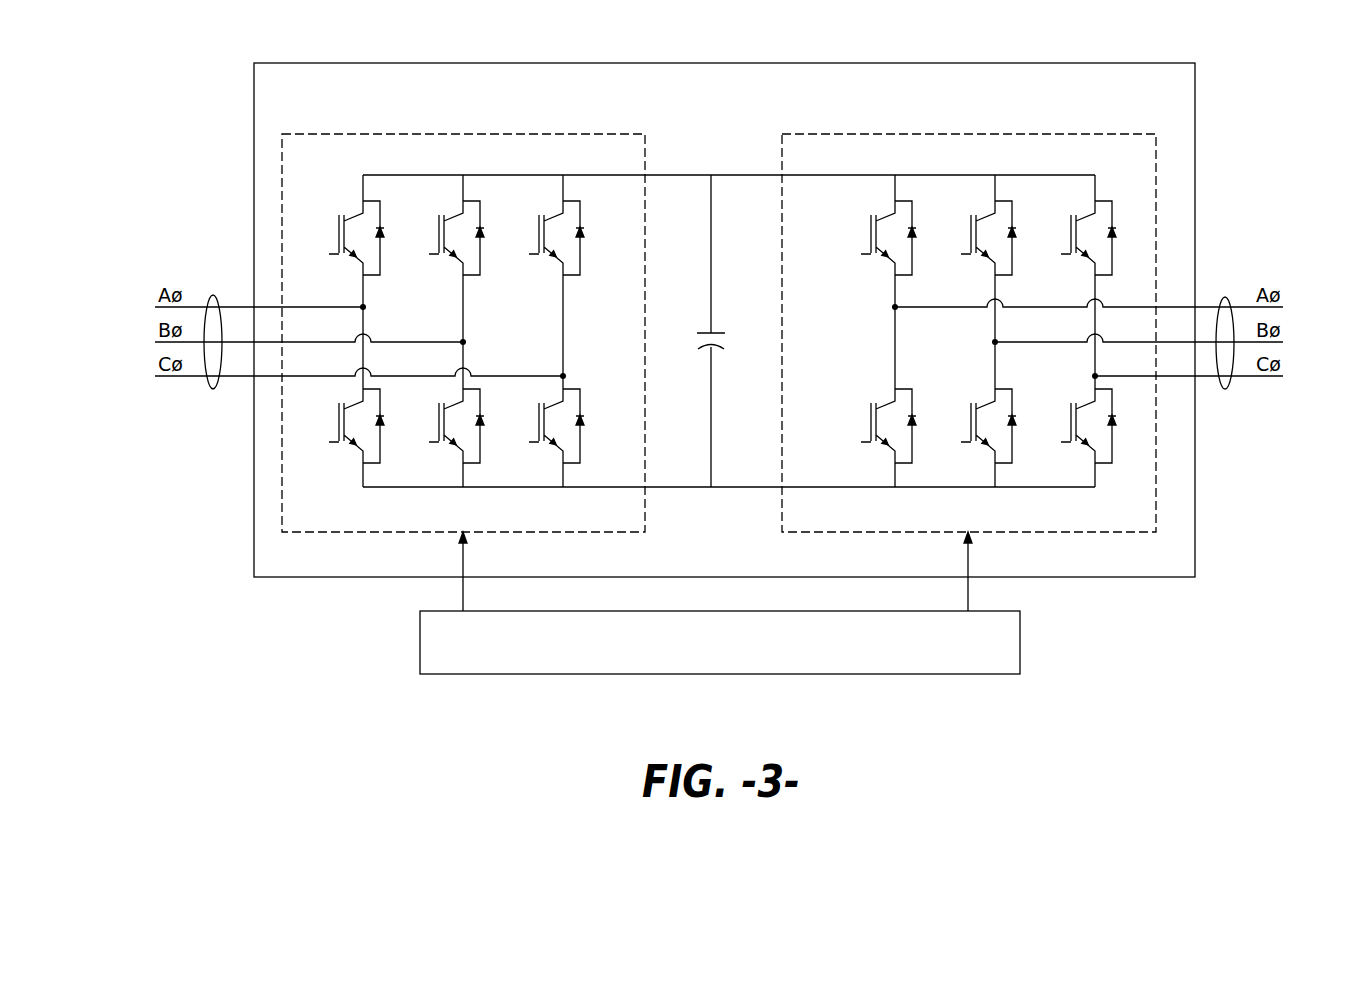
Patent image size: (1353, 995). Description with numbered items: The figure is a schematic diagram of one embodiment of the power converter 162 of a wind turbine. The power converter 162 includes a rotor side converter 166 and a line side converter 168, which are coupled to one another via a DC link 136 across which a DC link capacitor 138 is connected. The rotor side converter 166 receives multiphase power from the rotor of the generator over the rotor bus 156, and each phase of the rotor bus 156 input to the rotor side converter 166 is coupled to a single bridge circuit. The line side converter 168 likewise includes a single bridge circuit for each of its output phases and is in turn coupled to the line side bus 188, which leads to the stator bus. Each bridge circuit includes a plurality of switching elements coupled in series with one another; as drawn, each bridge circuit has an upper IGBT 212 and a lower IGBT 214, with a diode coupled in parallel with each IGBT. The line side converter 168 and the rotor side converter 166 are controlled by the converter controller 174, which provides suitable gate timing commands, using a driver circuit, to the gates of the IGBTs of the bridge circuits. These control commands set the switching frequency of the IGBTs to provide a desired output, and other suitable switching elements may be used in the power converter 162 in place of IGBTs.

The power converter 162 is at (805, 63).
The line side converter 168 is at (467, 134).
The rotor side converter 166 is at (1053, 134).
The DC link 136 is at (675, 175).
The DC link capacitor 138 is at (716, 330).
The upper IGBT 212 is at (870, 235).
The lower IGBT 214 is at (870, 430).
The converter controller 174 is at (1020, 650).
The line side bus 188 is at (213, 296).
The rotor bus 156 is at (1225, 298).